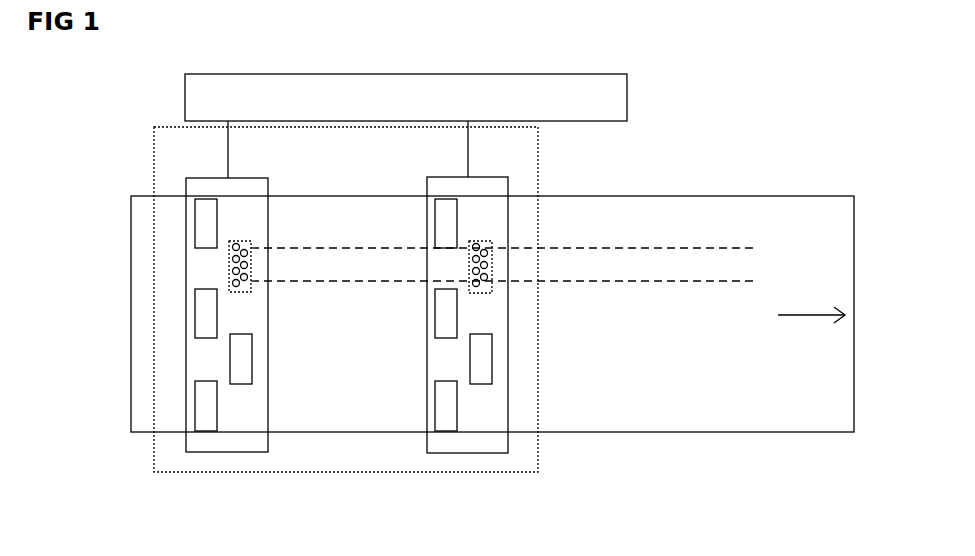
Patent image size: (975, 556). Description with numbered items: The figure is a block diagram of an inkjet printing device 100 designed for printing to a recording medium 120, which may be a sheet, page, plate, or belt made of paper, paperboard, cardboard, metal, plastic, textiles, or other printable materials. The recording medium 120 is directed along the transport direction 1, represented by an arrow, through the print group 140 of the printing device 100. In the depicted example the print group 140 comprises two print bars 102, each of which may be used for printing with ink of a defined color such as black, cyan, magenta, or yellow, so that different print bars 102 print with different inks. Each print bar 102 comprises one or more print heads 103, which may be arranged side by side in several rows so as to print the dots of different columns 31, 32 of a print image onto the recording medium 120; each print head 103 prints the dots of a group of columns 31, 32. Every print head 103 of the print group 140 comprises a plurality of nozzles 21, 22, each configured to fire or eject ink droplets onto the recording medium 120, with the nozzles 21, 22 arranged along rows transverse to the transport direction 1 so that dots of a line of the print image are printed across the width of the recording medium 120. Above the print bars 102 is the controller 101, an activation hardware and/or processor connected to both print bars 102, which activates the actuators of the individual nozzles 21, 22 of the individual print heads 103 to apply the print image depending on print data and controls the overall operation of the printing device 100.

The transport direction 1 is at (808, 318).
The nozzle 21 is at (243, 246).
The nozzle 22 is at (231, 284).
The column 31 is at (331, 246).
The column 32 is at (312, 285).
The printing device 100 is at (118, 104).
The controller 101 is at (628, 96).
The print bar 102 is at (253, 178).
The print head 103 is at (203, 222).
The recording medium 120 is at (815, 192).
The print group 140 is at (153, 151).